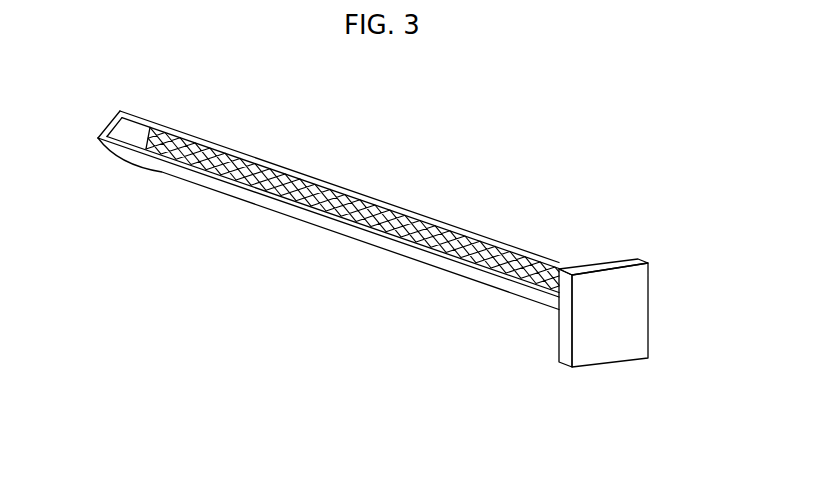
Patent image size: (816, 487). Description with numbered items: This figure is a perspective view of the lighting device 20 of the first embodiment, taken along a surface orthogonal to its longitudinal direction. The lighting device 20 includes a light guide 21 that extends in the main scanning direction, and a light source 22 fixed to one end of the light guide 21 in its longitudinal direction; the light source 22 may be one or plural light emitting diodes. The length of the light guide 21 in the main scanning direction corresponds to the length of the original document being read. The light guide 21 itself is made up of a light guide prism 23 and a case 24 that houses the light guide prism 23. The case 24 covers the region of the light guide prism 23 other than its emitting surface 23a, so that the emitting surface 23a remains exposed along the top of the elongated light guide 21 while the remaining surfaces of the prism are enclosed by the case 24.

The lighting device 20 is at (468, 198).
The light guide 21 is at (242, 280).
The light source 22 is at (615, 313).
The light guide prism 23 is at (316, 196).
The emitting surface 23a is at (277, 170).
The case 24 is at (362, 232).